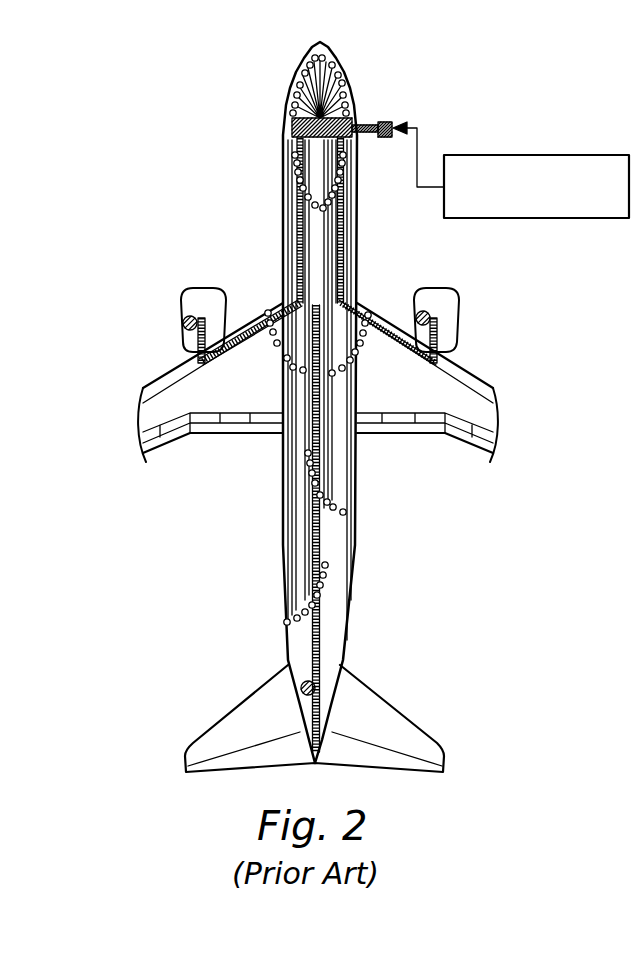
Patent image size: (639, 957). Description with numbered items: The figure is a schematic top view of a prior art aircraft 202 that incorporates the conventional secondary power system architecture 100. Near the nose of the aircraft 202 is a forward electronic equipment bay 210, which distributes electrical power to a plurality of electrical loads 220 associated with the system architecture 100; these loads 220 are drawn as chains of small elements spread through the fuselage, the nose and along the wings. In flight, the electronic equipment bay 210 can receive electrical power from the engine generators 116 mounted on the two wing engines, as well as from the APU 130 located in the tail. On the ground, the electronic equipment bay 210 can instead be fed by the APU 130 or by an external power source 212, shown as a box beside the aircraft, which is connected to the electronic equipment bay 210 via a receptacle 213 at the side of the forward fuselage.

The aircraft 202 is at (155, 152).
The secondary power system architecture 100 is at (282, 253).
The engine generators 116 is at (182, 320).
The APU 130 is at (321, 691).
The forward electronic equipment bay 210 is at (356, 115).
The external power source 212 is at (558, 154).
The receptacle 213 is at (392, 124).
The electrical loads 220 is at (336, 213).